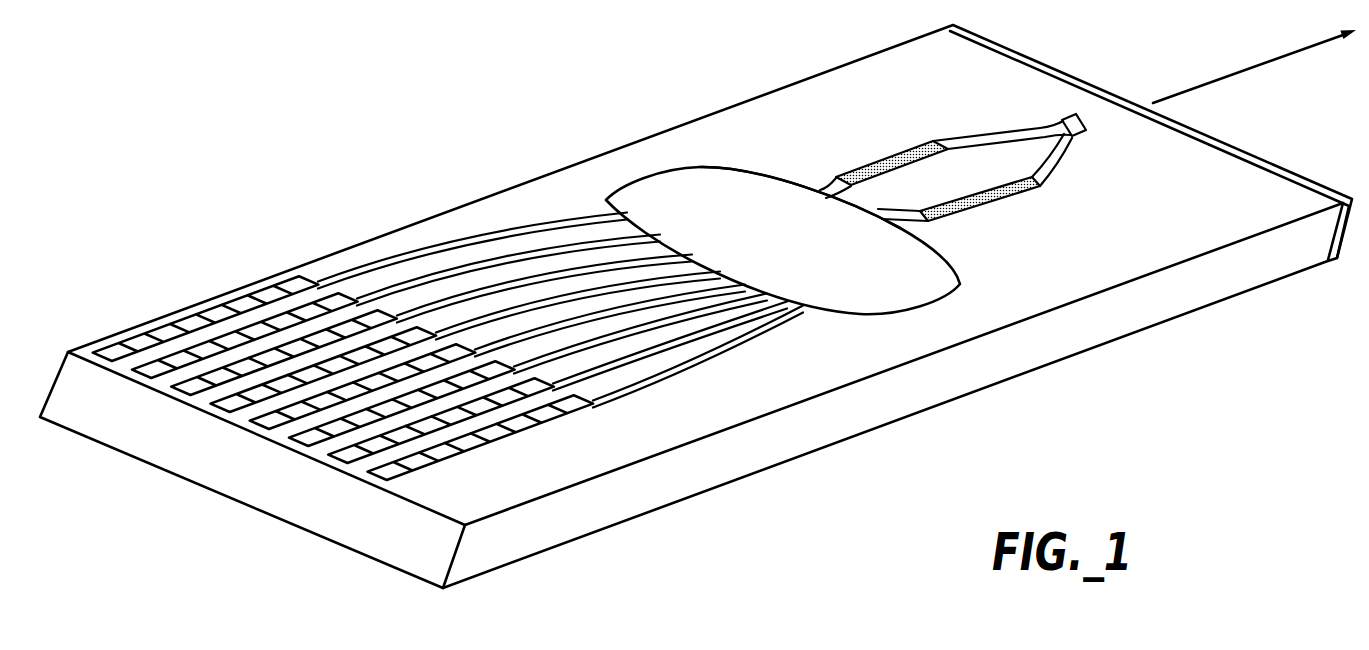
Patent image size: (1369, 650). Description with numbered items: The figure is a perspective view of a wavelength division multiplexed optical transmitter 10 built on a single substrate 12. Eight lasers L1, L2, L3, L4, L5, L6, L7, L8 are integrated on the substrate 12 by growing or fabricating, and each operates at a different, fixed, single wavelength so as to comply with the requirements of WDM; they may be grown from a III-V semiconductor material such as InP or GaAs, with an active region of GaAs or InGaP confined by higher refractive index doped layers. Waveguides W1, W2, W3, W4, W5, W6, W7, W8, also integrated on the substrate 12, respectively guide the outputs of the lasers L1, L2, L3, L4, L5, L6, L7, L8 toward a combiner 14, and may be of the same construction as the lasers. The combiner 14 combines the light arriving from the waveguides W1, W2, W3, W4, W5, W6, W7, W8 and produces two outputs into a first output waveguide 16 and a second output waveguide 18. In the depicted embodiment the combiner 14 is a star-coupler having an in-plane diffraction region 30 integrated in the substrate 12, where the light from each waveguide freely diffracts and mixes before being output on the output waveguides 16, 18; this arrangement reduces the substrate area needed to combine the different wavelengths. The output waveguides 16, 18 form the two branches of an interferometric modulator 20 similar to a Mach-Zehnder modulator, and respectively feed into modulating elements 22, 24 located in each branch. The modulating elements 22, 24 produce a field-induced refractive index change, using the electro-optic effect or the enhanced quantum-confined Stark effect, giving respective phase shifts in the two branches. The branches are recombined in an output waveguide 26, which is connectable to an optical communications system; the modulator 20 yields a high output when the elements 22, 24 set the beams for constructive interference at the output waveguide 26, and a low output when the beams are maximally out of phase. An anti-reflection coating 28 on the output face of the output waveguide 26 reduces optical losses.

The wavelength division multiplexed optical transmitter 10 is at (336, 80).
The substrate 12 is at (641, 140).
The combiner 14 is at (900, 223).
The output waveguide 16 is at (824, 188).
The output waveguide 18 is at (924, 219).
The interferometric modulator 20 is at (997, 133).
The modulating element 22 is at (897, 153).
The modulating element 24 is at (1030, 200).
The output waveguide 26 is at (1085, 124).
The anti-reflection coating 28 is at (1245, 145).
The in-plane diffraction region 30 is at (767, 200).
The waveguide W1 is at (385, 267).
The waveguide W2 is at (457, 272).
The waveguide W3 is at (525, 279).
The waveguide W4 is at (590, 285).
The waveguide W5 is at (566, 320).
The waveguide W6 is at (629, 321).
The waveguide W7 is at (692, 323).
The waveguide W8 is at (750, 321).
The laser L1 is at (305, 293).
The laser L2 is at (345, 302).
The laser L3 is at (384, 319).
The laser L4 is at (423, 336).
The laser L5 is at (462, 353).
The laser L6 is at (507, 365).
The laser L7 is at (546, 382).
The laser L8 is at (585, 399).